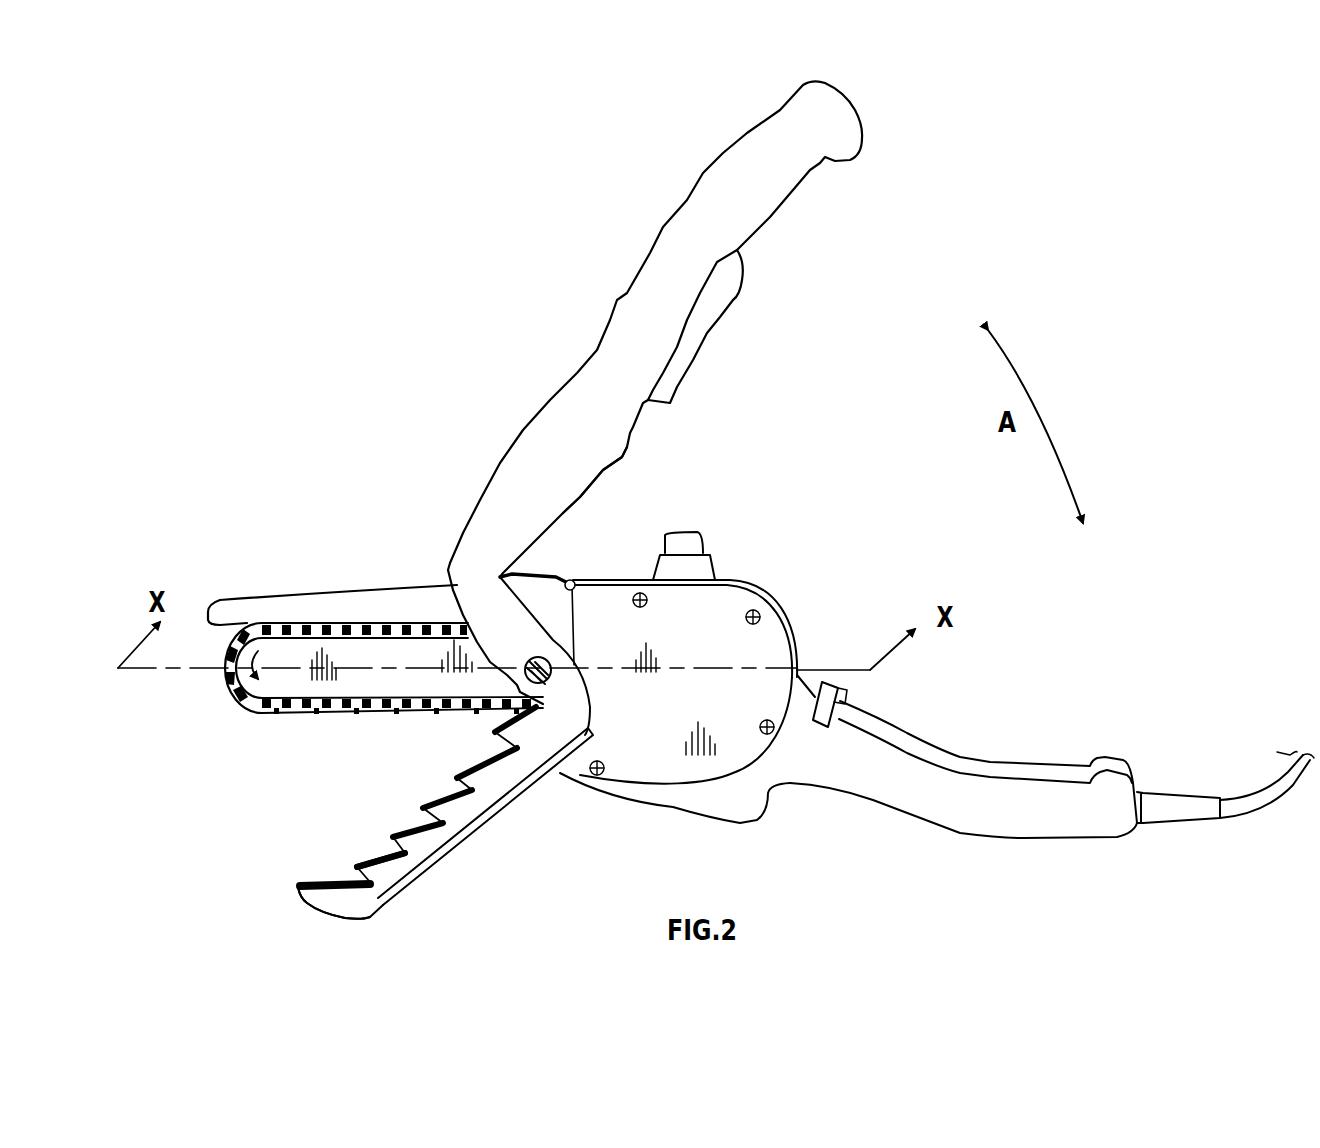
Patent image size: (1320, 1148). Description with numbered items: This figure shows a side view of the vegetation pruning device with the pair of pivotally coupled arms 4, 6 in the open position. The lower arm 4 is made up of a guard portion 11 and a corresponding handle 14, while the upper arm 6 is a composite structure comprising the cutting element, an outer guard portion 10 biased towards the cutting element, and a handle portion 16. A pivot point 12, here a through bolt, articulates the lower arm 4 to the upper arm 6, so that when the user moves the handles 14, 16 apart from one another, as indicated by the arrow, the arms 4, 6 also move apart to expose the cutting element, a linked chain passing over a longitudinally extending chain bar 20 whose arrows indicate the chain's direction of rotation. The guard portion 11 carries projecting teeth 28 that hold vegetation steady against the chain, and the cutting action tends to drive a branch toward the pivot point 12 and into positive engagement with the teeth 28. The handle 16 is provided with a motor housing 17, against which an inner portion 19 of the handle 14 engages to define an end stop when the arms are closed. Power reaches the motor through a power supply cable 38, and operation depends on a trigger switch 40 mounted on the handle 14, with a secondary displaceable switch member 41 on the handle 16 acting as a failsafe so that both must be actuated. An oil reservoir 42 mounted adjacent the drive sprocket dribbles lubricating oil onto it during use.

The lower arm 4 is at (482, 860).
The upper arm 6 is at (328, 574).
The guard portion 10 is at (393, 585).
The guard portion 11 is at (357, 906).
The pivot point 12 is at (545, 684).
The handle 14 is at (667, 260).
The handle portion 16 is at (975, 814).
The motor housing 17 is at (747, 787).
The inner portion 19 is at (565, 512).
The chain bar 20 is at (283, 682).
The projecting teeth 28 is at (362, 866).
The power supply cable 38 is at (1267, 797).
The trigger switch 40 is at (692, 322).
The secondary displaceable switch member 41 is at (847, 692).
The oil reservoir 42 is at (707, 538).